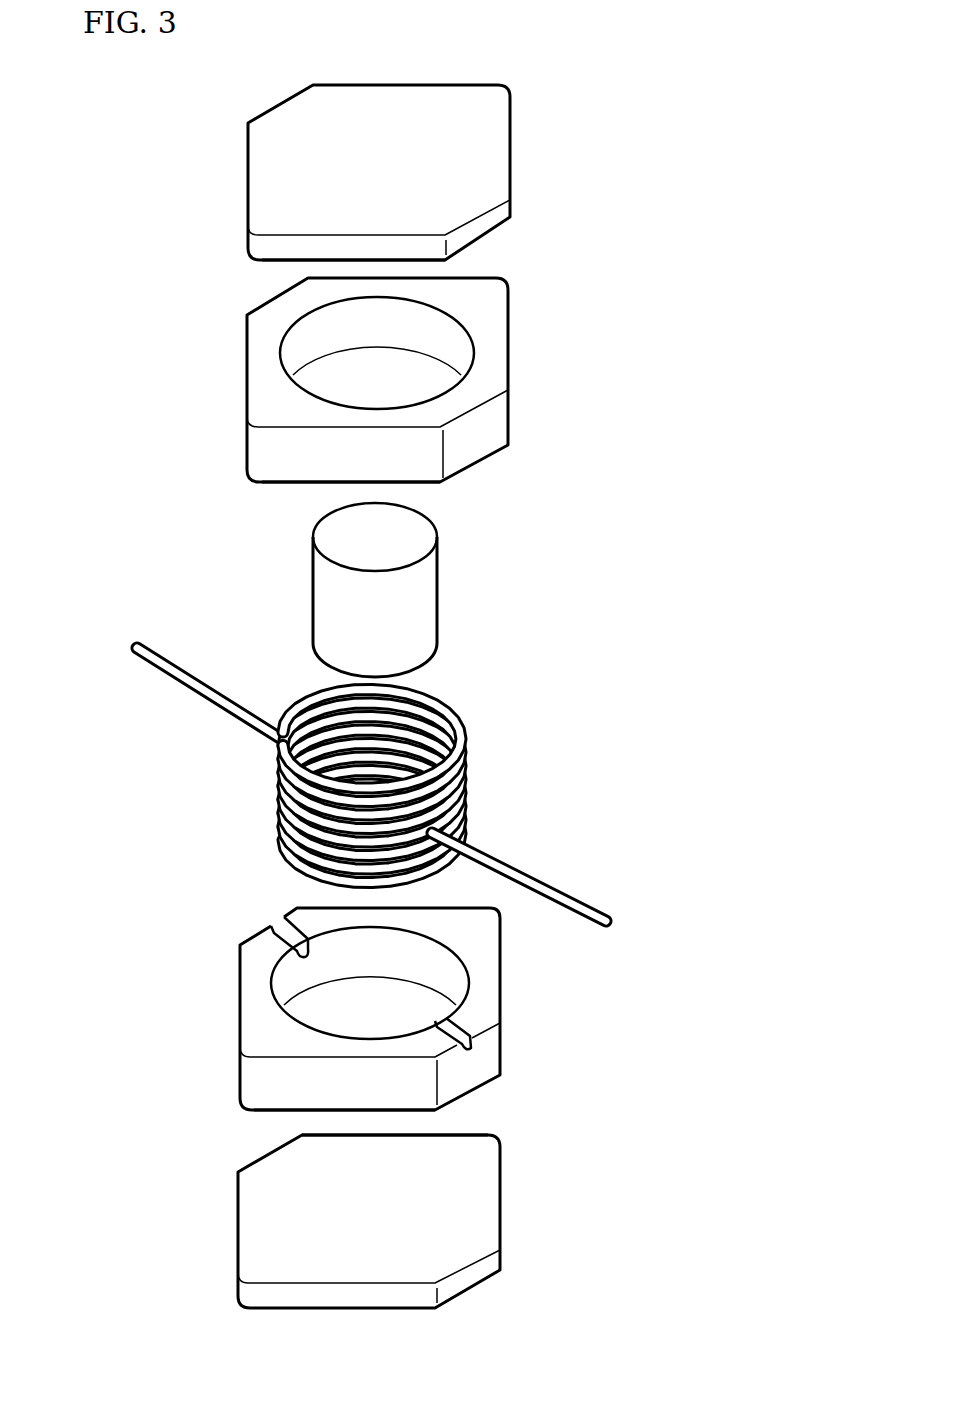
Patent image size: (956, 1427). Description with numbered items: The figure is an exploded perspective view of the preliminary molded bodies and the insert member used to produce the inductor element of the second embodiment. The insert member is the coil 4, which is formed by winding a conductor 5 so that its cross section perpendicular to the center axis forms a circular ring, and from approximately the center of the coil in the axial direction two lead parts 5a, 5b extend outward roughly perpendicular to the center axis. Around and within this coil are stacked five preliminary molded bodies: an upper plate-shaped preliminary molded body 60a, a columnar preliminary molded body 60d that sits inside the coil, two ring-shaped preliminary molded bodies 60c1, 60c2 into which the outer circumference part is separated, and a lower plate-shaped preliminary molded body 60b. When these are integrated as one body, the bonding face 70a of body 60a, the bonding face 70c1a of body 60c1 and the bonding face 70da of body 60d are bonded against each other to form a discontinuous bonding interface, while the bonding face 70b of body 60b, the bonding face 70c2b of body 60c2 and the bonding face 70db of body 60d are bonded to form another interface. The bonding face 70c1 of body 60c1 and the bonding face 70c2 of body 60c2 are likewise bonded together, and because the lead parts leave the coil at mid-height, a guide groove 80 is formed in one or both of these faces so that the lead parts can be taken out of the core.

The preliminary molded body 60a is at (512, 150).
The bonding face 70a is at (284, 261).
The preliminary molded body 60c1 is at (510, 345).
The bonding face 70c1a is at (262, 356).
The bonding face 70c1 is at (282, 484).
The preliminary molded body 60d is at (381, 590).
The bonding face 70da is at (344, 536).
The bonding face 70db is at (426, 672).
The coil 4 is at (375, 752).
The conductor 5 is at (313, 875).
The lead part 5a is at (193, 680).
The lead part 5b is at (540, 880).
The preliminary molded body 60c2 is at (503, 978).
The guide groove 80 is at (280, 920).
The bonding face 70c2 is at (264, 1020).
The bonding face 70c2b is at (276, 1110).
The preliminary molded body 60b is at (503, 1235).
The bonding face 70b is at (263, 1203).